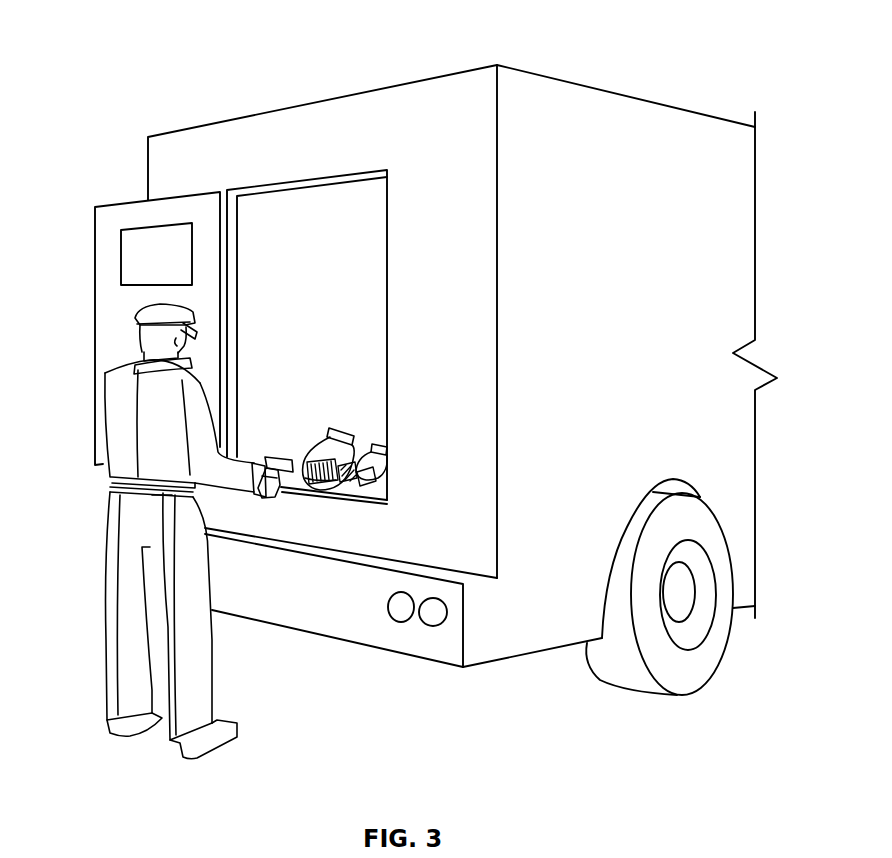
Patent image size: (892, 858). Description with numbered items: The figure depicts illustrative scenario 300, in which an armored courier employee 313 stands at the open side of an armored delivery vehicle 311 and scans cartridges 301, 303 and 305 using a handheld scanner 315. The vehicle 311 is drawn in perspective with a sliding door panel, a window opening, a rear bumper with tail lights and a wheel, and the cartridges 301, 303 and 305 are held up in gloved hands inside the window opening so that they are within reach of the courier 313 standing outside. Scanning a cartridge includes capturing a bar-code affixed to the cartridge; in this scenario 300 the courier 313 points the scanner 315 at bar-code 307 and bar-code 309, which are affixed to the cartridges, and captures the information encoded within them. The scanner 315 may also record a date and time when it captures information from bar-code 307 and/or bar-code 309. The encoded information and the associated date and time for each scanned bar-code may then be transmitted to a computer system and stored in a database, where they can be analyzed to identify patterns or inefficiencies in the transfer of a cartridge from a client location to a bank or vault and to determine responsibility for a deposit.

The scenario 300 is at (166, 30).
The cartridge 301 is at (335, 428).
The cartridge 303 is at (368, 433).
The cartridge 305 is at (380, 474).
The bar-code 307 is at (320, 478).
The bar-code 309 is at (352, 482).
The delivery vehicle 311 is at (755, 547).
The armored courier employee 313 is at (103, 383).
The scanner 315 is at (268, 456).